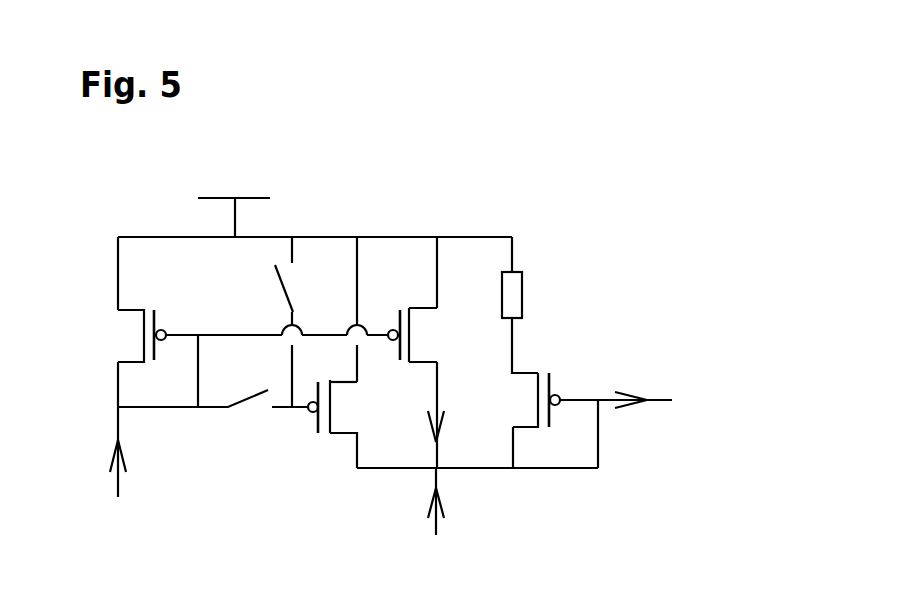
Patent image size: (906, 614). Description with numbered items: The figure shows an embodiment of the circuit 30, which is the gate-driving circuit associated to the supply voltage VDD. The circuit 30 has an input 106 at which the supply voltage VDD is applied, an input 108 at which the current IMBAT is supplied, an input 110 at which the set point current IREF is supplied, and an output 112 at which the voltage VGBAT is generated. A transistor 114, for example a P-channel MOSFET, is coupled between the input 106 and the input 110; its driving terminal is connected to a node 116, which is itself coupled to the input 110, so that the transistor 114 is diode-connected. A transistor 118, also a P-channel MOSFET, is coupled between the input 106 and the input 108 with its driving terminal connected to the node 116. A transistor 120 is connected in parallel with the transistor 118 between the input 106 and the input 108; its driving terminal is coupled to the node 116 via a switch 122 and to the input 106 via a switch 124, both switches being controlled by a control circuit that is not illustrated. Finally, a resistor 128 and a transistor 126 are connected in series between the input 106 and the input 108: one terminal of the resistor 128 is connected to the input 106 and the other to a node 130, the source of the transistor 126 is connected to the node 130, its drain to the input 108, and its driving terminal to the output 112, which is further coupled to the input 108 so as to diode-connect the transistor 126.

The circuit 30 is at (620, 278).
The input 106 is at (267, 190).
The input 108 is at (436, 530).
The input 110 is at (118, 488).
The output 112 is at (657, 398).
The transistor 114 is at (131, 310).
The node 116 is at (198, 334).
The transistor 118 is at (426, 309).
The transistor 120 is at (337, 437).
The switch 122 is at (253, 410).
The switch 124 is at (290, 279).
The transistor 126 is at (528, 372).
The resistor 128 is at (522, 286).
The node 130 is at (512, 358).